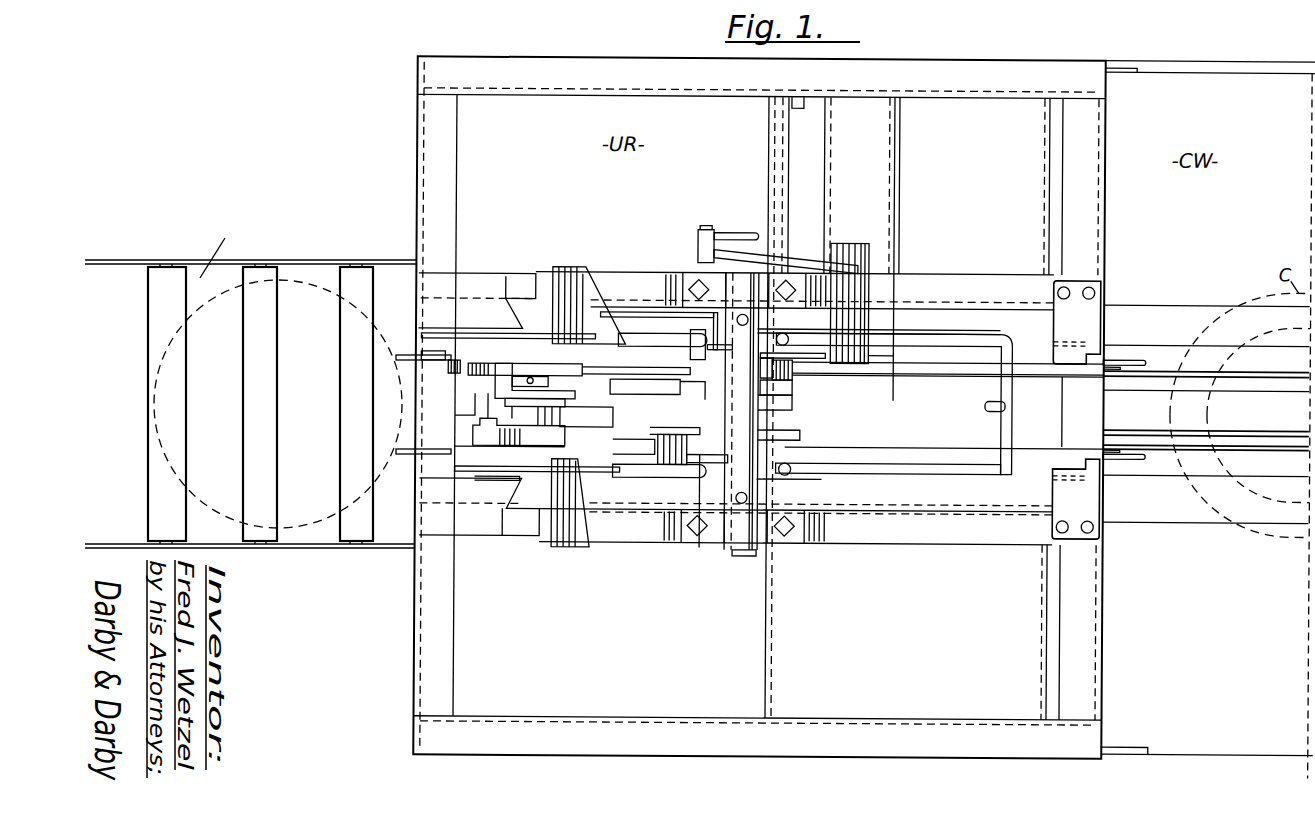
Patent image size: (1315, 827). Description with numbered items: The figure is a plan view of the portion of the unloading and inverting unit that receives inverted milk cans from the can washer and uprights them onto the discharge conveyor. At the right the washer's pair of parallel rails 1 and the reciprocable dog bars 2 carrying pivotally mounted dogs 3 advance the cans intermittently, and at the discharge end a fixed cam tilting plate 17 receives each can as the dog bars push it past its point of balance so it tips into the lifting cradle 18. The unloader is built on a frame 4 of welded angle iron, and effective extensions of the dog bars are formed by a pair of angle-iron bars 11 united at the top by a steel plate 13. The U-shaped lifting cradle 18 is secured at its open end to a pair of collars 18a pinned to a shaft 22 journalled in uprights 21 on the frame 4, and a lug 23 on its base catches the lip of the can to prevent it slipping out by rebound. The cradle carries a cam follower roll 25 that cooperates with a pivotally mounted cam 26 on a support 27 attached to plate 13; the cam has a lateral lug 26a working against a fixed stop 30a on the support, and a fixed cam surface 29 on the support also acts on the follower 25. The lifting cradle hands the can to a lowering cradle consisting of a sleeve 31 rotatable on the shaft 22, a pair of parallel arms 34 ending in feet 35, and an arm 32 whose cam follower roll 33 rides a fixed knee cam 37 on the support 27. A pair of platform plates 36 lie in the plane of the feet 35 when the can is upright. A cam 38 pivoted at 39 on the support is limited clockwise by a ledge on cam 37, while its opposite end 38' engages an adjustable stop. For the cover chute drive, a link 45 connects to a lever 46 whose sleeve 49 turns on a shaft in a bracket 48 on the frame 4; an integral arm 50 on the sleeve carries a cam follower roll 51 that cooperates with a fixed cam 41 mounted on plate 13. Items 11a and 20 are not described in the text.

The parallel rails 1 is at (1268, 397).
The reciprocable dog bars 2 is at (1276, 448).
The pivotally mounted dogs 3 is at (1140, 458).
The frame 4 is at (455, 672).
The bars 11 is at (932, 377).
The shaft 11a is at (396, 451).
The top plate 13 is at (465, 412).
The fixed cam tilting plate 17 is at (1076, 410).
The lifting cradle 18 is at (1012, 420).
The collars 18a is at (762, 492).
The rail 20 is at (968, 538).
The uprights 21 is at (725, 548).
The shaft 22 is at (745, 556).
The lug 23 is at (985, 405).
The cam follower roll 25 is at (768, 403).
The pivotally mounted cam 26 is at (565, 372).
The lateral lug 26a is at (657, 388).
The support 27 is at (559, 412).
The fixed cam surface 29 is at (508, 365).
The fixed stop 30a is at (766, 417).
The sleeve 31 is at (768, 432).
The arm 32 is at (695, 510).
The cam follower roll 33 is at (680, 470).
The parallel arms 34 is at (700, 465).
The feet 35 is at (585, 545).
The platform plates 36 is at (478, 515).
The fixed knee cam 37 is at (678, 436).
The cam 38 is at (633, 470).
The opposite end of cam 38 38' is at (536, 475).
The pivot of cam 38 39 is at (473, 430).
The fixed cam 41 is at (447, 372).
The link 45 is at (735, 232).
The lever 46 is at (792, 262).
The bracket 48 is at (893, 275).
The sleeve 49 is at (890, 305).
The integral arm 50 is at (820, 355).
The cam follower roll 51 is at (792, 378).